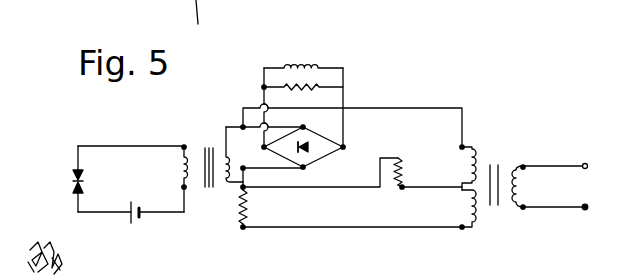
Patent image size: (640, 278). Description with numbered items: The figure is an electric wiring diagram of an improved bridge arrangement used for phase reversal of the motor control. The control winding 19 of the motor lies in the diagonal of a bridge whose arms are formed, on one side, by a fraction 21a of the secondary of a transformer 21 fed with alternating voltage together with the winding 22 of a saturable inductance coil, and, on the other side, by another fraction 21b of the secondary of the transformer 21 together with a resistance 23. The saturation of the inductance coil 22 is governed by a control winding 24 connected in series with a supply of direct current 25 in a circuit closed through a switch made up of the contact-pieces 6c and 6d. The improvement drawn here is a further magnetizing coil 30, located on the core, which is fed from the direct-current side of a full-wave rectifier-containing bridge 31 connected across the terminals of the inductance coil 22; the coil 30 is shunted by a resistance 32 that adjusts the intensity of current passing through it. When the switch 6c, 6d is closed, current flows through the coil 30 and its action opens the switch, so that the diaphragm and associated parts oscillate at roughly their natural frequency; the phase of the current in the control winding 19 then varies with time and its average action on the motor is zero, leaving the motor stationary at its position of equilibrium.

The contact-piece 6c is at (75, 178).
The contact-piece 6d is at (74, 188).
The control winding 19 is at (398, 188).
The transformer 21 is at (500, 165).
The secondary winding fraction 21a is at (473, 147).
The secondary winding fraction 21b is at (478, 212).
The inductance coil winding 22 is at (223, 153).
The resistance 23 is at (255, 211).
The control winding 24 is at (190, 175).
The supply of direct current 25 is at (137, 216).
The magnetizing coil 30 is at (307, 62).
The rectifier bridge 31 is at (320, 145).
The resistance 32 is at (318, 82).